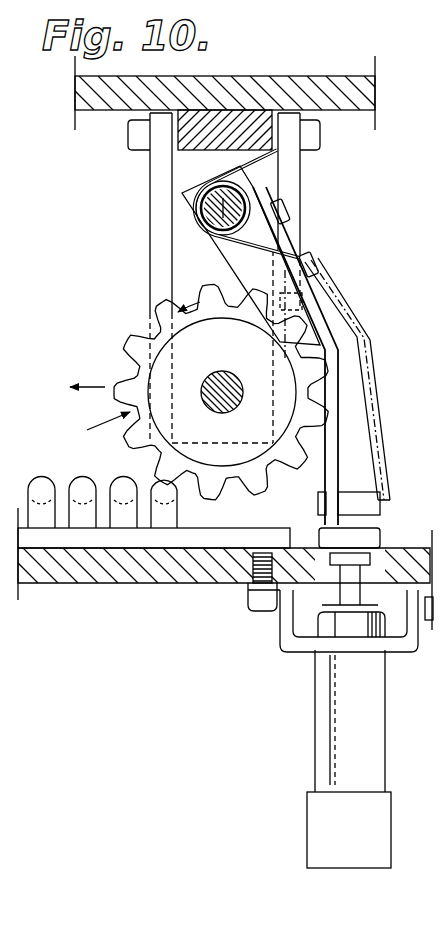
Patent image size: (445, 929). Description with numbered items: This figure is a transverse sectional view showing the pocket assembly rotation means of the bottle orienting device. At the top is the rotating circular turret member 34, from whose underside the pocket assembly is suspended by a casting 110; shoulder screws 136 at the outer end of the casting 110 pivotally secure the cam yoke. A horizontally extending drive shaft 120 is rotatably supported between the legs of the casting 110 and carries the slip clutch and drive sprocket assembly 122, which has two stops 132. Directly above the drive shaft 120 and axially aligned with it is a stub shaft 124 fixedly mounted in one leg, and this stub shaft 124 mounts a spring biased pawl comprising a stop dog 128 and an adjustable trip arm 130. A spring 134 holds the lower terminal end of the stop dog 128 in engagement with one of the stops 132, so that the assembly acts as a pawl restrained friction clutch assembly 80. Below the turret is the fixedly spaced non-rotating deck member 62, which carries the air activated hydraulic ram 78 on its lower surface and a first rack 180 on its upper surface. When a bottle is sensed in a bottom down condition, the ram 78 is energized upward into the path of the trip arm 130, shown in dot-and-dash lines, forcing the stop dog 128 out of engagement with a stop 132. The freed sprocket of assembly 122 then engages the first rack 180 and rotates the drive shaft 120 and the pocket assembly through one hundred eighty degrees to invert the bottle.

The rotating circular turret member 34 is at (283, 80).
The casting 110 is at (232, 120).
The shoulder screws 136 is at (128, 138).
The stub shaft 124 is at (205, 212).
The spring 134 is at (198, 186).
The stop dog 128 is at (280, 317).
The adjustable trip arm 130 is at (337, 446).
The stops 132 is at (150, 437).
The slip clutch and drive sprocket assembly 122 is at (157, 353).
The drive shaft 120 is at (203, 378).
The pawl restrained friction clutch assembly 80 is at (90, 428).
The first rack 180 is at (172, 520).
The non-rotating deck member 62 is at (152, 578).
The air activated hydraulic ram 78 is at (316, 703).